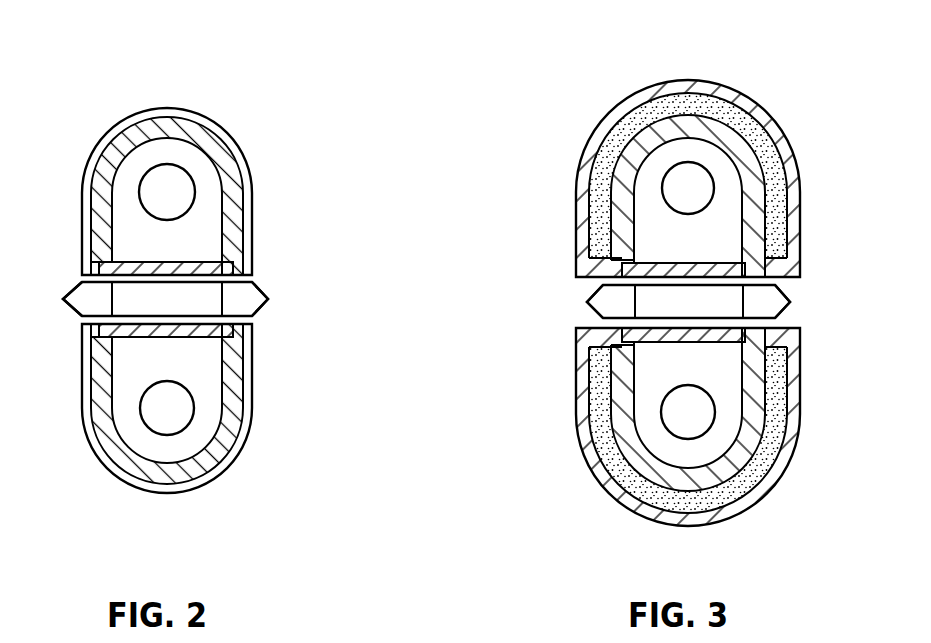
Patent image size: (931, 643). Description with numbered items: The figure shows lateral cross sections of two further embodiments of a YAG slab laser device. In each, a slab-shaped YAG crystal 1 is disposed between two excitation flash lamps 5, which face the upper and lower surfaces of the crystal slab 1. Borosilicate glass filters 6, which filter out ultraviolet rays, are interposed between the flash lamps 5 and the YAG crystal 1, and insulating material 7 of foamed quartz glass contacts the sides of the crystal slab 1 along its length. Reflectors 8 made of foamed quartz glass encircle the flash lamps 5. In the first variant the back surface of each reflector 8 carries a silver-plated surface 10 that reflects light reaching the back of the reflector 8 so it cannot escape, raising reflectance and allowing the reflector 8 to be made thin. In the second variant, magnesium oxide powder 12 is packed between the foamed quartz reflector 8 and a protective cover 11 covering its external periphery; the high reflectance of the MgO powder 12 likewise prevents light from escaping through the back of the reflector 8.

In FIG. 2, the YAG slab crystal 1 is at (207, 302).
In FIG. 3, the YAG slab crystal 1 is at (728, 300).
In FIG. 2, the excitation flash lamp 5 is at (177, 183).
In FIG. 3, the excitation flash lamp 5 is at (688, 167).
In FIG. 2, the borosilicate glass filter 6 is at (110, 267).
In FIG. 3, the borosilicate glass filter 6 is at (623, 268).
In FIG. 2, the insulating material 7 is at (82, 297).
In FIG. 3, the insulating material 7 is at (608, 297).
In FIG. 2, the reflector 8 is at (185, 128).
In FIG. 3, the reflector 8 is at (647, 458).
In FIG. 2, the silver-plated surface 10 is at (137, 118).
In FIG. 3, the protective cover 11 is at (607, 113).
In FIG. 3, the magnesium oxide (MgO) powder 12 is at (780, 190).